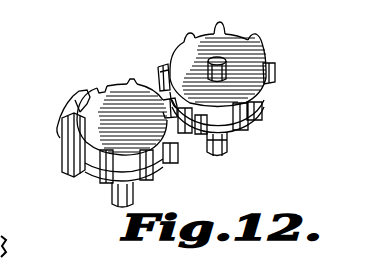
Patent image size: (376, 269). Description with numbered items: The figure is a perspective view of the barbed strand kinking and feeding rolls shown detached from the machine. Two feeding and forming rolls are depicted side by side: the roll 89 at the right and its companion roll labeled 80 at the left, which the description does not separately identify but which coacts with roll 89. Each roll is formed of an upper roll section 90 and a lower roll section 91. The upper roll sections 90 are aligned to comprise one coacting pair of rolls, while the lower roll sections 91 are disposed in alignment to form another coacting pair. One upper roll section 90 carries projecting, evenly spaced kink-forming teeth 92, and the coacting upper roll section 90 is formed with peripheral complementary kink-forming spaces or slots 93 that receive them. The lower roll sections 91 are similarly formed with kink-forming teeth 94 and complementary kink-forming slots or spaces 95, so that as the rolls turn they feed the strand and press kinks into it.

The first toothed wheel 80 is at (73, 95).
The feeding and forming roll 89 is at (263, 55).
The upper roll section 90 is at (92, 95).
The lower roll section 91 is at (92, 175).
The kink-forming teeth 92 is at (270, 84).
The kink-forming slots 93 is at (64, 143).
The kink-forming teeth 94 is at (160, 179).
The kink-forming slots 95 is at (230, 143).